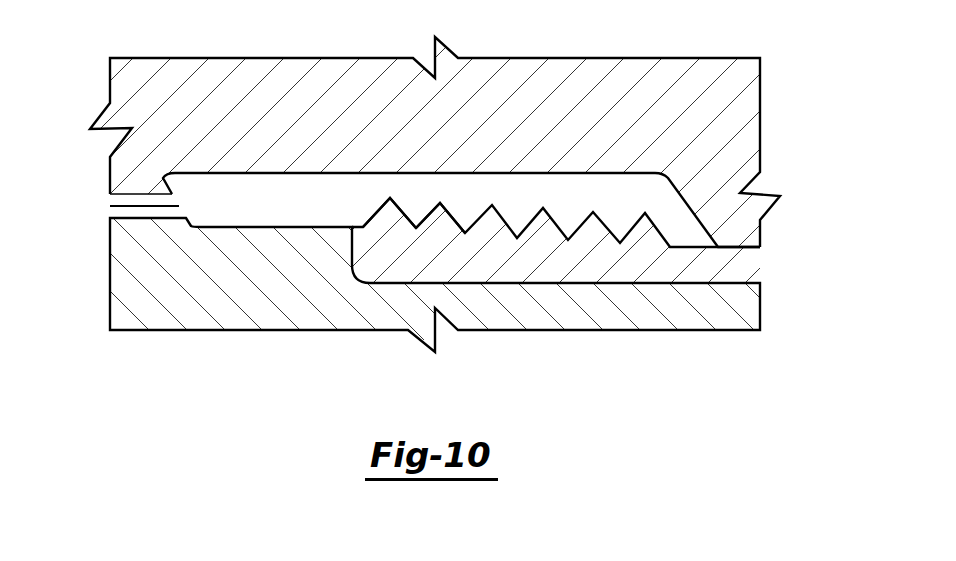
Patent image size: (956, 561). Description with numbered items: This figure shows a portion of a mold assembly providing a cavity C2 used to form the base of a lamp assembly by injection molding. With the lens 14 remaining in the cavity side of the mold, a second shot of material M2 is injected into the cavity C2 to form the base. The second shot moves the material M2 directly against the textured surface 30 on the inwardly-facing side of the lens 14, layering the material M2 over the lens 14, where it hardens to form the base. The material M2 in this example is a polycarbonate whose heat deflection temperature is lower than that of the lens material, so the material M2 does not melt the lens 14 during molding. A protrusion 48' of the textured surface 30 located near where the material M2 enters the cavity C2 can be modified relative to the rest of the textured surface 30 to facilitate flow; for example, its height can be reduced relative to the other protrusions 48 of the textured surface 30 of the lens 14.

The lens 14 is at (692, 263).
The textured surface 30 is at (557, 223).
The protrusions 48 is at (499, 130).
The protrusion 48' is at (389, 123).
The cavity C2 is at (637, 202).
The material M2 is at (336, 200).